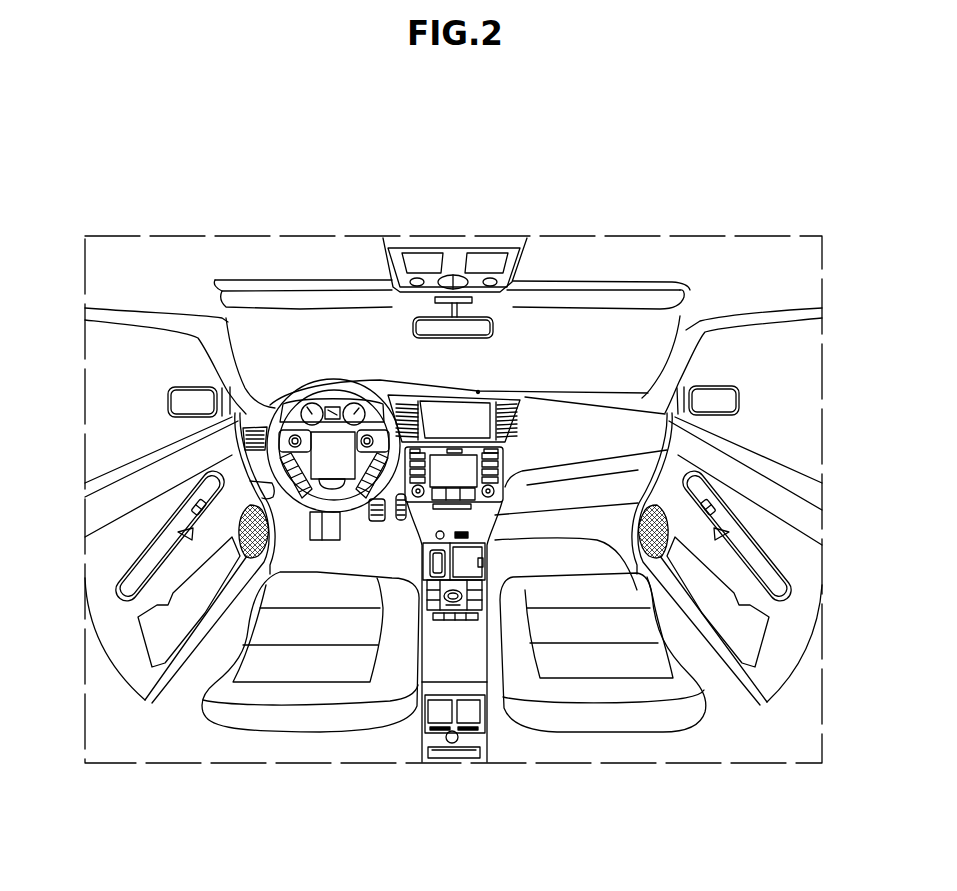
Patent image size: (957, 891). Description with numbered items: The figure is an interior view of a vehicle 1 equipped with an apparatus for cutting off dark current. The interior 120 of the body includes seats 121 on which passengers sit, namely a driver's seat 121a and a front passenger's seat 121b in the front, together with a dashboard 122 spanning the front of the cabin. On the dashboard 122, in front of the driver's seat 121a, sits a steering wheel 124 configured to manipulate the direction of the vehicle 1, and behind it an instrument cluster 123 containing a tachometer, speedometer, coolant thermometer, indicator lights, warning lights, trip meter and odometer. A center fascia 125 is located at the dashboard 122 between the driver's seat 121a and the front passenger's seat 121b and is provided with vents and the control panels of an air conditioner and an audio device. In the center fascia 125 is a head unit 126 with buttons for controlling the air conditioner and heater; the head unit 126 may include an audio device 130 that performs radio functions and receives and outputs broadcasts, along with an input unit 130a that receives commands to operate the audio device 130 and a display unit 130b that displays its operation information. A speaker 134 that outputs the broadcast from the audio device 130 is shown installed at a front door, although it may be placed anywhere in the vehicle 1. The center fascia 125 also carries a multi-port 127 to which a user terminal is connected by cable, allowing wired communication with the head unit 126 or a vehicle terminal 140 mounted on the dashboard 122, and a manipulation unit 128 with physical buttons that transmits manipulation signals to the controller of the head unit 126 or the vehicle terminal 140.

The vehicle 1 is at (266, 190).
The interior 120 is at (611, 260).
The seats 121 is at (454, 716).
The driver's seat 121a is at (297, 727).
The front passenger's seat 121b is at (603, 692).
The dashboard 122 is at (606, 414).
The instrument cluster 123 is at (322, 396).
The steering wheel 124 is at (333, 437).
The center fascia 125 is at (510, 506).
The head unit 126 is at (512, 458).
The multi-port 127 is at (466, 531).
The manipulation unit 128 is at (482, 592).
The audio device 130 is at (362, 548).
The input unit 130a is at (380, 518).
The display unit 130b is at (415, 520).
The speaker 134 is at (268, 535).
The vehicle terminal 140 is at (484, 388).